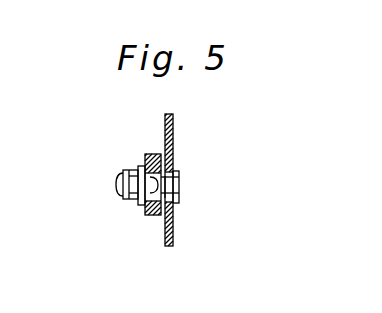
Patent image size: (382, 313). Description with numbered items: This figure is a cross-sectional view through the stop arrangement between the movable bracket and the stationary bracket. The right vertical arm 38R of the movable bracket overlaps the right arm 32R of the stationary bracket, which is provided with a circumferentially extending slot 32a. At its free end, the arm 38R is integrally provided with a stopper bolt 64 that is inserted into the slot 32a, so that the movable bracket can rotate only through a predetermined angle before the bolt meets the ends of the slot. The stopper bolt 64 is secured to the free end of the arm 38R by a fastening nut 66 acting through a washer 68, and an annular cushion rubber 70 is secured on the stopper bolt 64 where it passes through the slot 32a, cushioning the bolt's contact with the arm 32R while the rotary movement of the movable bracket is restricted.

The right vertical arm 32R is at (173, 130).
The circumferentially extending slot 32a is at (173, 158).
The right vertical arm 38R is at (149, 154).
The stopper bolt 64 is at (180, 185).
The fastening nut 66 is at (130, 204).
The washer 68 is at (140, 167).
The annular cushion rubber 70 is at (178, 204).